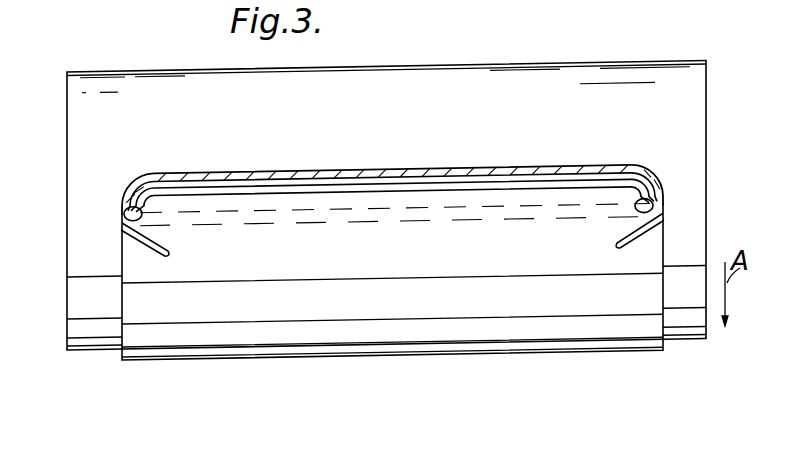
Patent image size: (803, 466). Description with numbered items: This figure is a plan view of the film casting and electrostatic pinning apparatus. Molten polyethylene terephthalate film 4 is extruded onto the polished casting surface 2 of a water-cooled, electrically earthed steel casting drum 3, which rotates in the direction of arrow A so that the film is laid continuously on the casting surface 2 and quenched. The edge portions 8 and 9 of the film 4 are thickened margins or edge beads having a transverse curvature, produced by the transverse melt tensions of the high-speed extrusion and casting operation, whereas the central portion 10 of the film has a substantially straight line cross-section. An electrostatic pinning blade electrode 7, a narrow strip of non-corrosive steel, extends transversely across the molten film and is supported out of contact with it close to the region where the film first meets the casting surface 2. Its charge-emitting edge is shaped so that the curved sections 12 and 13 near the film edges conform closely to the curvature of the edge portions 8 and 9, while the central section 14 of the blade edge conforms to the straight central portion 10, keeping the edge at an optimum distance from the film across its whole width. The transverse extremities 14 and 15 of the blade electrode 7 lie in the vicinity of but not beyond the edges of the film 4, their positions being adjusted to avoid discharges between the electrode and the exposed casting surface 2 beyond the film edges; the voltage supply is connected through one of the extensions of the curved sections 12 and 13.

The polished casting surface 2 is at (147, 90).
The casting drum 3 is at (66, 190).
The molten polyethylene terephthalate film 4 is at (147, 336).
The electrostatic pinning blade electrode 7 is at (526, 184).
The edge portion of the film 8 is at (147, 183).
The edge portion of the film 9 is at (643, 177).
The central portion of the film 10 is at (425, 169).
The curved section of the charge-emitting edge 12 is at (660, 206).
The curved section of the charge-emitting edge 13 is at (122, 212).
The central section / transverse extremity of the blade electrode 14 is at (122, 227).
The transverse extremity of the blade electrode 15 is at (665, 224).